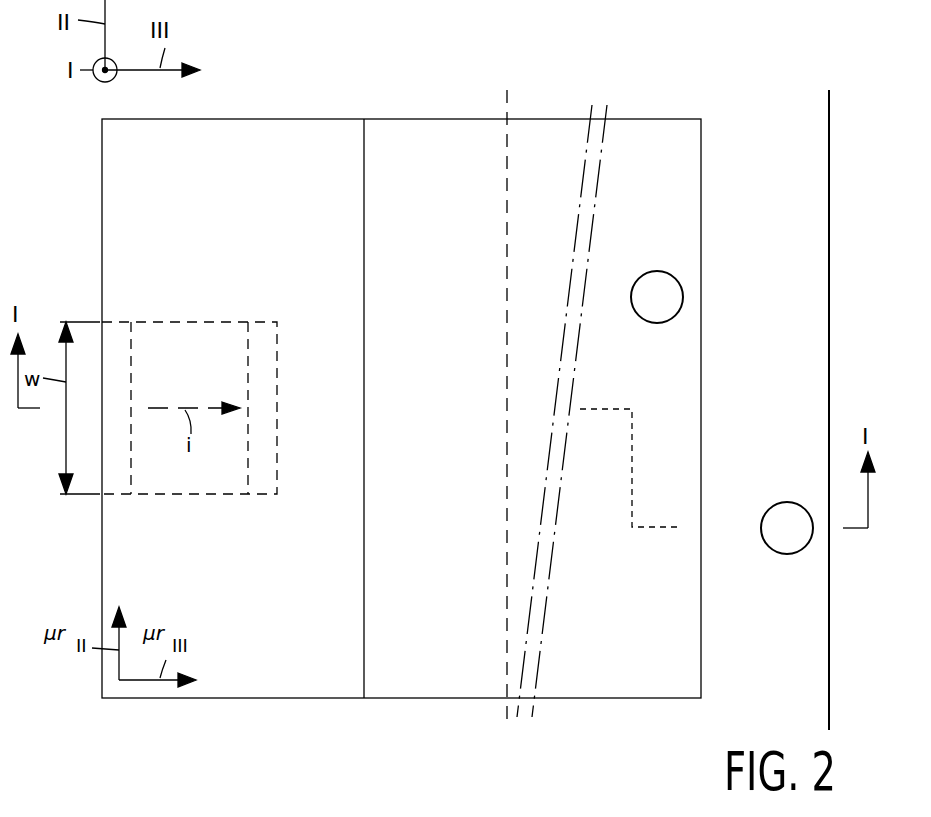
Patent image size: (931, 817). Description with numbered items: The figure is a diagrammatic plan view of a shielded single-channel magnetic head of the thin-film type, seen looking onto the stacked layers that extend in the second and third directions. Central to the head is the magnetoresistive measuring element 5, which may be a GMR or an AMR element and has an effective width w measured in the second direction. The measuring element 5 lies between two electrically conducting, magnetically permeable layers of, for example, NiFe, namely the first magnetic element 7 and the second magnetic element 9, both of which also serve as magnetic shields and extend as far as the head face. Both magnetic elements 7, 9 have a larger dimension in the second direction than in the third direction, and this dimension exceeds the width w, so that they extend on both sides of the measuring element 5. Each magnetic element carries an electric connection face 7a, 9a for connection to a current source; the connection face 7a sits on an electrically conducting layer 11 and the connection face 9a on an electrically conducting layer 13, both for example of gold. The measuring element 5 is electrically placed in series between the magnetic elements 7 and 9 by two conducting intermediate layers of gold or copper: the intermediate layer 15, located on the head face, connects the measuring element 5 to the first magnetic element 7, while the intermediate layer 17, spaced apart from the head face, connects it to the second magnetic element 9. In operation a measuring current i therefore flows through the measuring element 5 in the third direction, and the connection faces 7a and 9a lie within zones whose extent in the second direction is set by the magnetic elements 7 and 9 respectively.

The magnetoresistive measuring element 5 is at (205, 490).
The first magnetic element 7 is at (407, 672).
The electric connection face of the first magnetic element 7a is at (787, 515).
The second magnetic element 9 is at (238, 140).
The electric connection face of the second magnetic element 9a is at (675, 303).
The electrically conducting layer 11 is at (780, 152).
The electrically conducting layer 13 is at (427, 145).
The electrically conducting intermediate layer 15 is at (118, 490).
The electrically conducting intermediate layer 17 is at (262, 490).